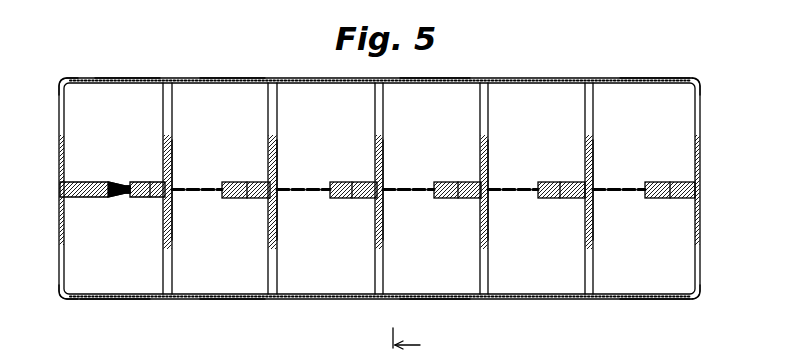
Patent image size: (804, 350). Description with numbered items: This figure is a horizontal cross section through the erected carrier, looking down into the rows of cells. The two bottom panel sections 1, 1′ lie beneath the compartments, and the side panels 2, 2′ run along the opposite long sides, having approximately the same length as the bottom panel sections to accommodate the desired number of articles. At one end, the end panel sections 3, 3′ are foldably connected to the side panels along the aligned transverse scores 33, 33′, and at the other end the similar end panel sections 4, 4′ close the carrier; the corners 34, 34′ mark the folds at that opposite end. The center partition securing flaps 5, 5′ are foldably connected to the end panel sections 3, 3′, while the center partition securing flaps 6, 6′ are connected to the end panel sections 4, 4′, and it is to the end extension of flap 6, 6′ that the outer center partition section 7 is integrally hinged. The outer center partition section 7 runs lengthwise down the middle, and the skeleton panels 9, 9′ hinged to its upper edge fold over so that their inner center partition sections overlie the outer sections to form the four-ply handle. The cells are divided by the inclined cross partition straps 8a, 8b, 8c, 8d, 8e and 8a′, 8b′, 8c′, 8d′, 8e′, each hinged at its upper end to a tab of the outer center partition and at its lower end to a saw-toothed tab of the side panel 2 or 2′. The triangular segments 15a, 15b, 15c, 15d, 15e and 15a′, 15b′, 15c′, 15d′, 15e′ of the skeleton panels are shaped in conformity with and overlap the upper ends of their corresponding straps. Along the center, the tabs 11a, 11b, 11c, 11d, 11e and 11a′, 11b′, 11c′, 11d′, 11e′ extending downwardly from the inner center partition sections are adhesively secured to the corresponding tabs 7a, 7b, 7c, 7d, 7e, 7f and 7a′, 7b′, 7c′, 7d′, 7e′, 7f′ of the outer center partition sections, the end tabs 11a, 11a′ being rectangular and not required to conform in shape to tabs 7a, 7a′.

The bottom panel section 1 is at (80, 103).
The bottom panel section 1′ is at (82, 271).
The side panel 2 is at (238, 78).
The side panel 2′ is at (246, 299).
The end panel section 3 is at (700, 151).
The end panel section 3′ is at (700, 226).
The end panel section 4 is at (59, 143).
The end panel section 4′ is at (59, 240).
The center partition securing flap 5 is at (674, 182).
The center partition securing flap 5′ is at (674, 198).
The center partition securing flap 6 is at (78, 183).
The center partition securing flap 6′ is at (78, 197).
The outer center partition section 7 is at (406, 337).
The tab of outer center partition section 7a is at (142, 182).
The tab of outer center partition section 7b is at (245, 182).
The tab of outer center partition section 7c is at (350, 182).
The tab of outer center partition section 7d is at (456, 182).
The tab of outer center partition section 7e is at (558, 182).
The tab of outer center partition section 7f is at (656, 182).
The tab of outer center partition section 7a′ is at (142, 197).
The tab of outer center partition section 7b′ is at (248, 198).
The tab of outer center partition section 7c′ is at (350, 198).
The tab of outer center partition section 7d′ is at (456, 198).
The tab of outer center partition section 7e′ is at (560, 198).
The tab of outer center partition section 7f′ is at (656, 198).
The cross partition strap 8a is at (163, 130).
The cross partition strap 8b is at (268, 148).
The cross partition strap 8c is at (375, 145).
The cross partition strap 8d is at (480, 140).
The cross partition strap 8e is at (585, 143).
The cross partition strap 8a′ is at (163, 240).
The cross partition strap 8b′ is at (268, 240).
The cross partition strap 8c′ is at (375, 240).
The cross partition strap 8d′ is at (480, 240).
The cross partition strap 8e′ is at (585, 240).
The skeleton panel 9 is at (93, 182).
The skeleton panel 9′ is at (100, 197).
The tab of inner center partition section 11a is at (122, 182).
The tab of inner center partition section 11b is at (228, 182).
The tab of inner center partition section 11c is at (334, 182).
The tab of inner center partition section 11d is at (440, 182).
The tab of inner center partition section 11e is at (546, 182).
The tab of inner center partition section 11a′ is at (122, 197).
The tab of inner center partition section 11b′ is at (230, 198).
The tab of inner center partition section 11c′ is at (336, 198).
The tab of inner center partition section 11d′ is at (442, 198).
The tab of inner center partition section 11e′ is at (552, 198).
The triangular segment 15a is at (172, 160).
The triangular segment 15b is at (277, 158).
The triangular segment 15c is at (383, 150).
The triangular segment 15d is at (488, 160).
The triangular segment 15e is at (593, 150).
The triangular segment 15a′ is at (172, 214).
The triangular segment 15b′ is at (277, 225).
The triangular segment 15c′ is at (383, 225).
The triangular segment 15d′ is at (488, 225).
The triangular segment 15e′ is at (593, 220).
The transverse score 33 is at (700, 78).
The transverse score 33′ is at (700, 299).
The upper left corner 34 is at (62, 78).
The lower left corner 34′ is at (59, 299).